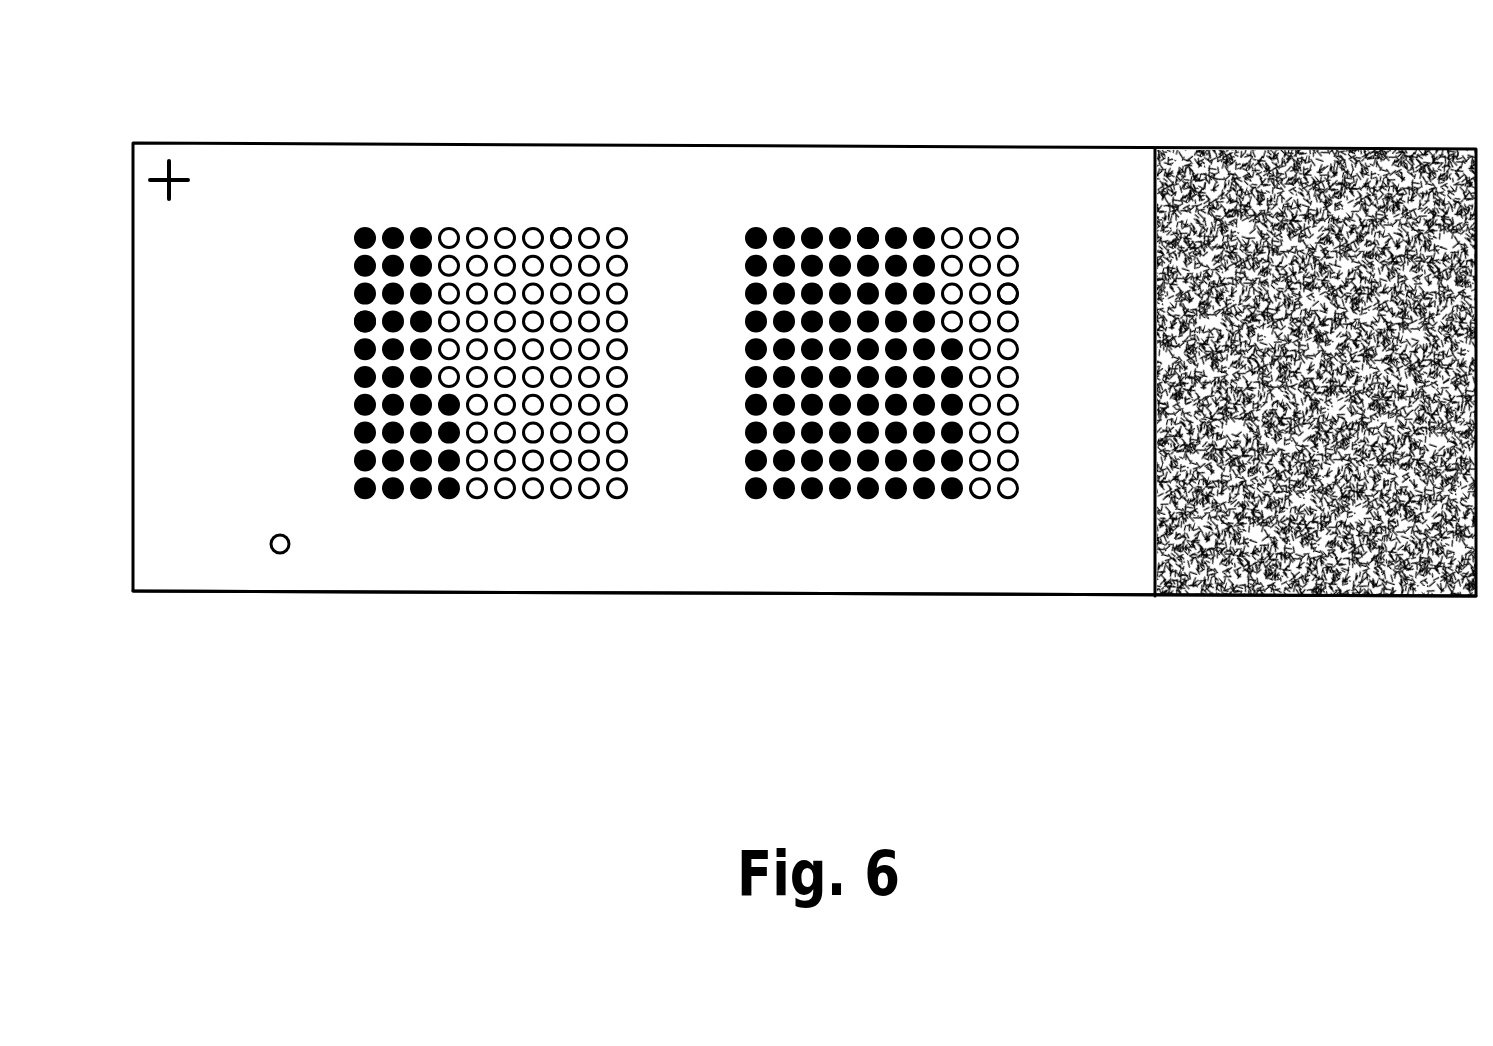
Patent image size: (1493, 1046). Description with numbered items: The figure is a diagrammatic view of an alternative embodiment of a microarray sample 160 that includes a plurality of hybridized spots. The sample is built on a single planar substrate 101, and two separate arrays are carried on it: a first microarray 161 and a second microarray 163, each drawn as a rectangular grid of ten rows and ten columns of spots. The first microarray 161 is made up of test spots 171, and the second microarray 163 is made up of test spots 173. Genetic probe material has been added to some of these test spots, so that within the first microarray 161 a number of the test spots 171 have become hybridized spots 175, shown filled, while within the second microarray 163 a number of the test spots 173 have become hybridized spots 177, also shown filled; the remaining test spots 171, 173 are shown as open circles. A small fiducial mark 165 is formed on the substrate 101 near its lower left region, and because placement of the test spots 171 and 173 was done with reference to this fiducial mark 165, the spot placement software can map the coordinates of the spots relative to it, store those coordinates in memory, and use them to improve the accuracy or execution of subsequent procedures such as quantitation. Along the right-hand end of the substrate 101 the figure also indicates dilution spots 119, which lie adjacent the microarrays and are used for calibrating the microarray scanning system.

The microarray sample 160 is at (818, 698).
The planar substrate 101 is at (273, 157).
The dilution spots 119 is at (912, 596).
The fiducial mark 165 is at (284, 552).
The first microarray 161 is at (628, 107).
The second microarray 163 is at (1018, 109).
The test spots 171 is at (566, 230).
The hybridized spots 175 is at (358, 320).
The hybridized spots 177 is at (870, 230).
The test spots 173 is at (1018, 296).